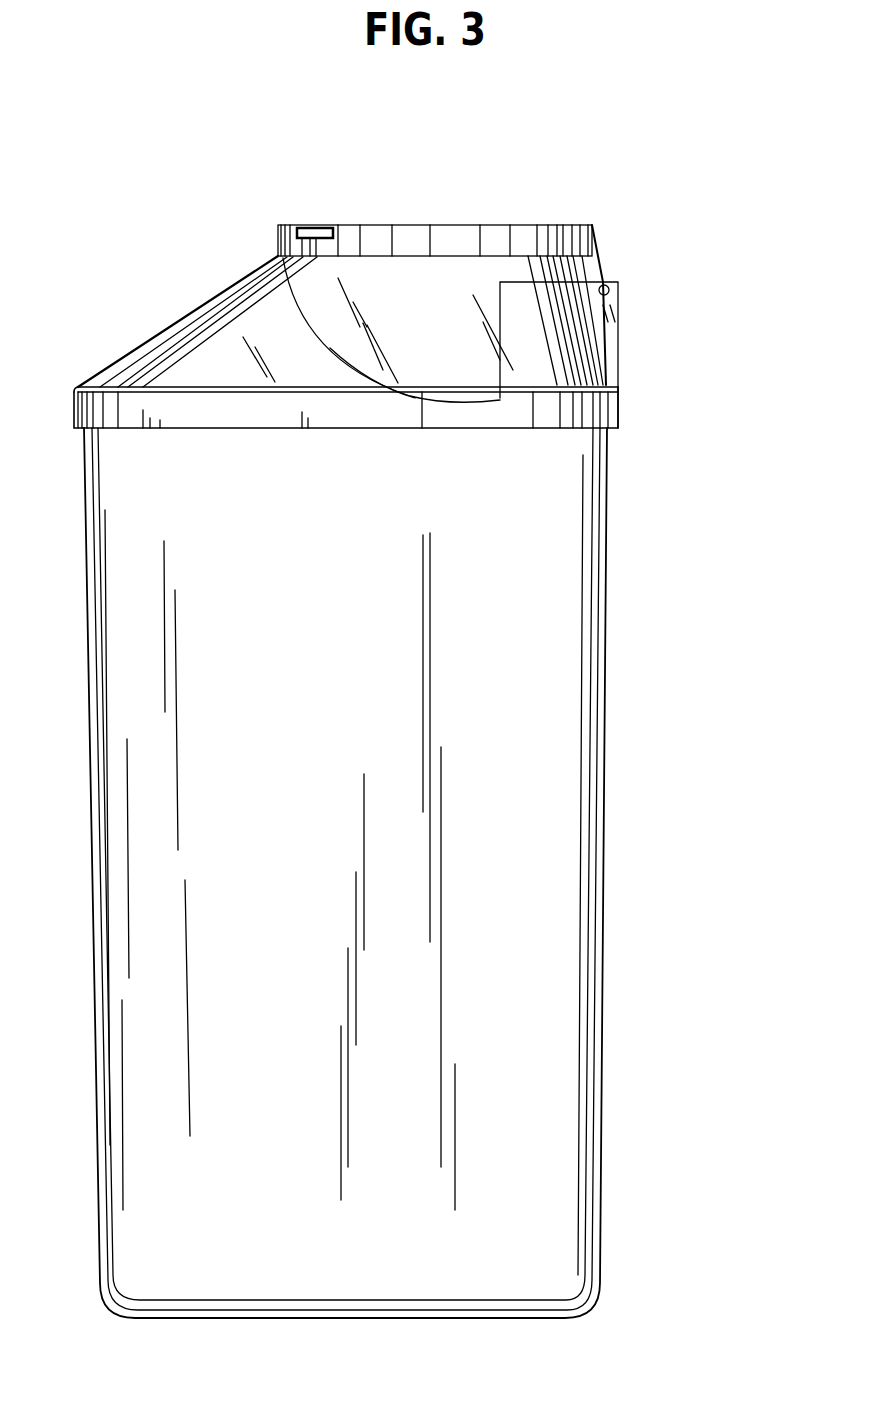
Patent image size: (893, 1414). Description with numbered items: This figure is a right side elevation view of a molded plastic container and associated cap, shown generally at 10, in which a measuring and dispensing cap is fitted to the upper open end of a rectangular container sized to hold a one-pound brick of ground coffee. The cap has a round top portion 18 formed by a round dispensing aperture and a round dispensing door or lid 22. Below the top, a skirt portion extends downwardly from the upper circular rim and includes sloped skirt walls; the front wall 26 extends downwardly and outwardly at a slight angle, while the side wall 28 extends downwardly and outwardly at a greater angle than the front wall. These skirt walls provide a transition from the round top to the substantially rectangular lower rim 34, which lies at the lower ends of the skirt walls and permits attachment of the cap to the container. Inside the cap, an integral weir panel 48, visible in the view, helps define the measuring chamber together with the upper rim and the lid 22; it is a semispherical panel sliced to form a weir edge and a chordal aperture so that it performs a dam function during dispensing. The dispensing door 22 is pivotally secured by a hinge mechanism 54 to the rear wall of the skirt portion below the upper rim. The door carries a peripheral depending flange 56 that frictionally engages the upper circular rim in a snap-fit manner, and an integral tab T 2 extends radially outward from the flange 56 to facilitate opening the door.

The molded plastic container and associated cap 10 is at (706, 380).
The round top portion 18 is at (620, 238).
The dispensing door or lid 22 is at (442, 248).
The front skirt wall 26 is at (118, 368).
The side skirt wall 28 is at (255, 370).
The lower rim 34 is at (503, 413).
The weir panel 48 is at (347, 350).
The hinge mechanism 54 is at (618, 289).
The peripheral depending flange 56 is at (497, 240).
The tab T2 2 is at (316, 231).